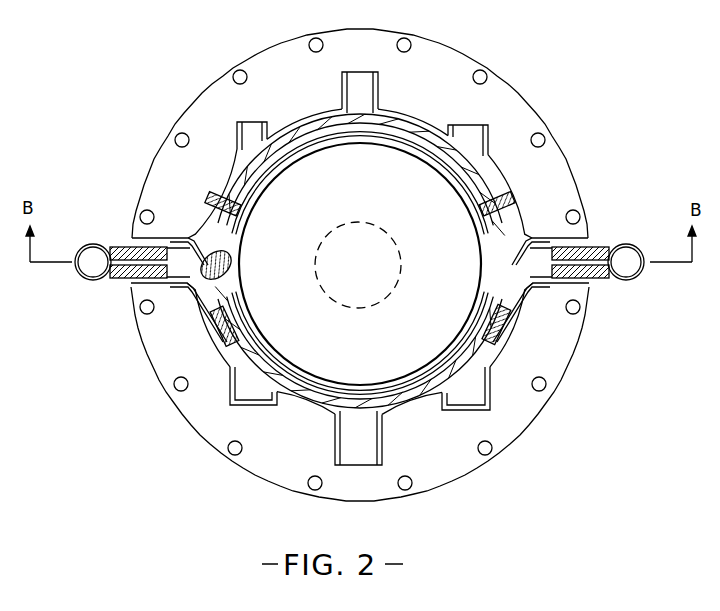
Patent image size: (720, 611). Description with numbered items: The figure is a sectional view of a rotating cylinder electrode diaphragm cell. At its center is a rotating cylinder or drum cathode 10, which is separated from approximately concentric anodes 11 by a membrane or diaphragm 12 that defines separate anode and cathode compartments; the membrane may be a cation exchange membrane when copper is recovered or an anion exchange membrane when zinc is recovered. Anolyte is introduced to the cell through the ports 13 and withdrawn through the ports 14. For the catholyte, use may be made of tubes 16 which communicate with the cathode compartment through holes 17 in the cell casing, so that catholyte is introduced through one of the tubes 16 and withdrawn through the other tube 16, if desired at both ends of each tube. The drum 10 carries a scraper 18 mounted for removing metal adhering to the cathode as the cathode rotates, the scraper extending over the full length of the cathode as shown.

The rotating cylinder or drum cathode 10 is at (435, 253).
The anodes 11 is at (509, 184).
The membrane or diaphragm 12 is at (430, 122).
The ports 13 is at (268, 128).
The ports 14 is at (233, 407).
The tubes 16 is at (108, 245).
The holes 17 is at (124, 280).
The scraper 18 is at (220, 282).